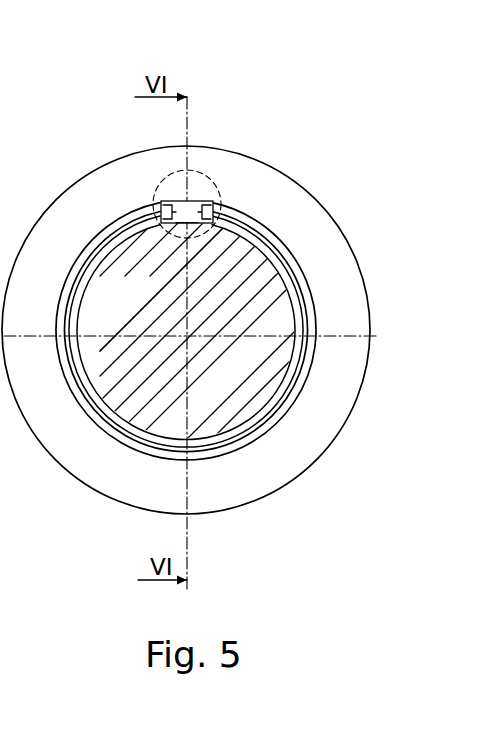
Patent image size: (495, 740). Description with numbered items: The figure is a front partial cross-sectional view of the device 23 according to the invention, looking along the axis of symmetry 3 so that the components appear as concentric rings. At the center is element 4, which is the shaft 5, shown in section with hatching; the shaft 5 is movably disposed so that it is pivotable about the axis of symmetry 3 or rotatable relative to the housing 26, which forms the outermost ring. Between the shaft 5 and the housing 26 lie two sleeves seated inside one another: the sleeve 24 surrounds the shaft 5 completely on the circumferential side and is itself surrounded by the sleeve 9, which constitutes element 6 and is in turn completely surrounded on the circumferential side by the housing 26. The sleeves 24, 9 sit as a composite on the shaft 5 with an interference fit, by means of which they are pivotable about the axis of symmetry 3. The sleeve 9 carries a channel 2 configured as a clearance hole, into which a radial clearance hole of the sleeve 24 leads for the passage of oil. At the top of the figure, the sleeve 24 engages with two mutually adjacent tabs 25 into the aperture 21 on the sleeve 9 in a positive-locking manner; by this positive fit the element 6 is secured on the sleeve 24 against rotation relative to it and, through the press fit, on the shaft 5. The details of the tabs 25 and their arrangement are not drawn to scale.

The device 23 is at (262, 102).
The housing 26 is at (307, 228).
The element 6 is at (300, 268).
The sleeve 9 is at (300, 287).
The sleeve 24 is at (303, 303).
The element 4 is at (262, 392).
The shaft 5 is at (268, 388).
The aperture 21 is at (203, 201).
The tabs 25 is at (161, 206).
The channel 2 is at (189, 232).
The axis of symmetry 3 is at (190, 334).